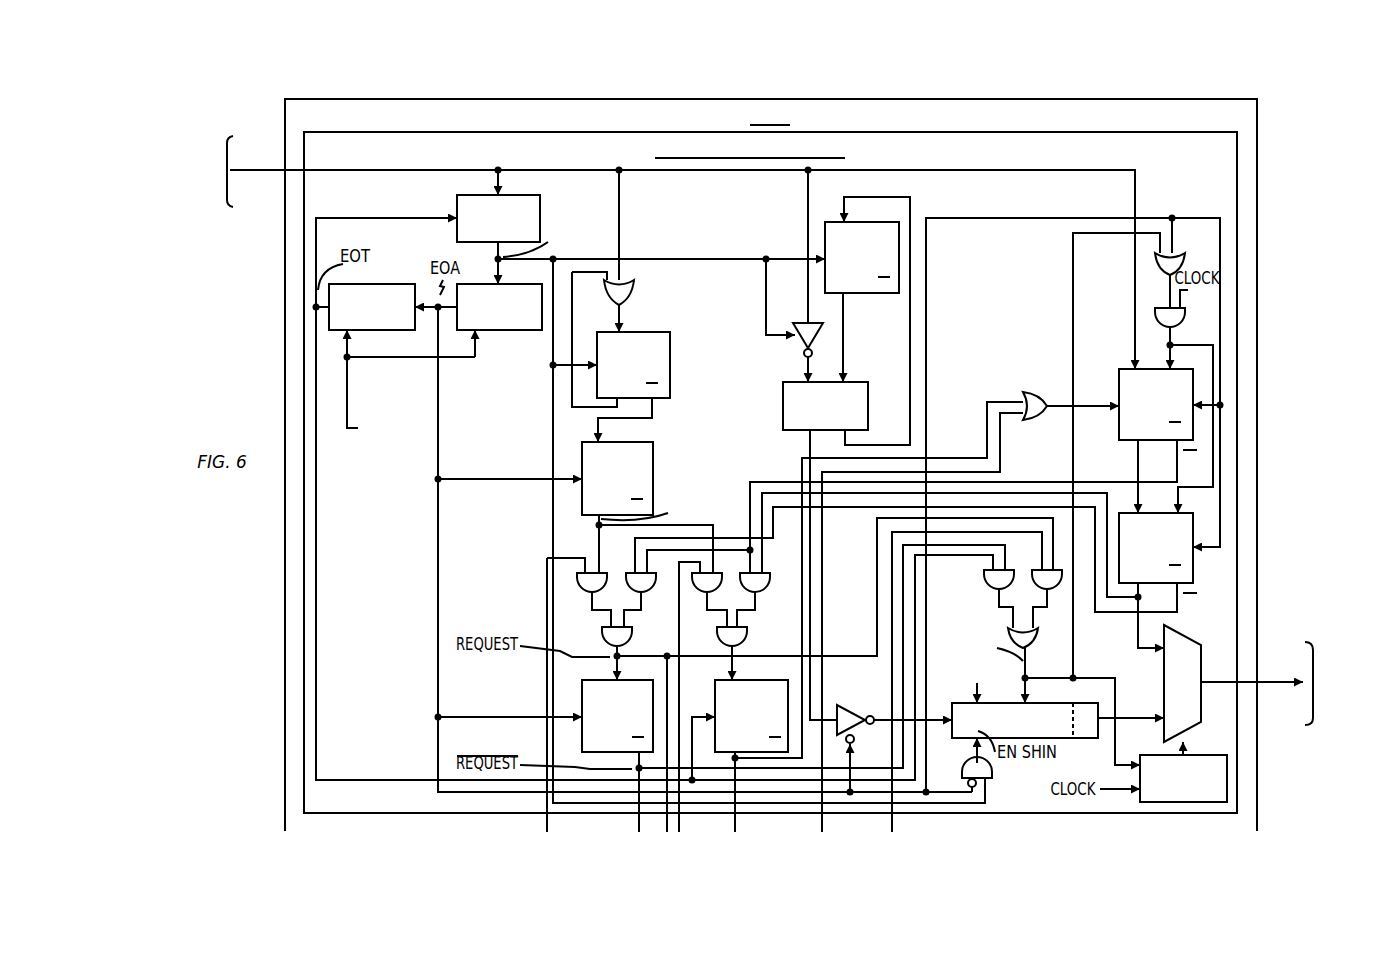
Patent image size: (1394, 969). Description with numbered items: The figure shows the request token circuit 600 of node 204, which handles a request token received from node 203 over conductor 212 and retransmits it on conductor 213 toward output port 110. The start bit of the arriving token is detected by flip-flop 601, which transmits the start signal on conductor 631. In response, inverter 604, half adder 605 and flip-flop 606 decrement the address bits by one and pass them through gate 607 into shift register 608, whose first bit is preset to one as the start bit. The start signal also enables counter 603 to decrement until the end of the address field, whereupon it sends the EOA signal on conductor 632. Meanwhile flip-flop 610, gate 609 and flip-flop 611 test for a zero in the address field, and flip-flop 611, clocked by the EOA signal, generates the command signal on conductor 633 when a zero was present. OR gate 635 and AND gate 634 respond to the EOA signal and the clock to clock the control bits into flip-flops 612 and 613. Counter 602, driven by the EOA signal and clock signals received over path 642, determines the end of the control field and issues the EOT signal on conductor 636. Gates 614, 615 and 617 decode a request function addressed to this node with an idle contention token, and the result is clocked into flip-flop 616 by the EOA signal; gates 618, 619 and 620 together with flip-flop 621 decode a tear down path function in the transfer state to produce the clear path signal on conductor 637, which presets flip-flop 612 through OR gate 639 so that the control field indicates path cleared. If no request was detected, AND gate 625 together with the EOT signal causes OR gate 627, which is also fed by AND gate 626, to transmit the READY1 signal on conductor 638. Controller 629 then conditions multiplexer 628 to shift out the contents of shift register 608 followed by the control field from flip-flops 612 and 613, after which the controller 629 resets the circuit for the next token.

The node 204 is at (818, 100).
The request token circuit 600 is at (1155, 132).
The node 203 is at (206, 171).
The conductor 212 is at (240, 170).
The conductor 213 is at (1275, 677).
The output port 110 is at (1340, 683).
The flip-flop 601 is at (513, 197).
The counter 602 is at (367, 284).
The counter 603 is at (487, 334).
The inverter 604 is at (800, 340).
The half adder 605 is at (783, 413).
The flip-flop 606 is at (880, 295).
The gate 607 is at (849, 705).
The shift register 608 is at (1049, 704).
The gate 609 is at (631, 302).
The flip-flop 610 is at (653, 333).
The flip-flop 611 is at (648, 442).
The flip-flop 612 is at (1122, 369).
The flip-flop 613 is at (1189, 520).
The gate 614 is at (605, 590).
The gate 615 is at (654, 590).
The flip-flop 616 is at (625, 680).
The gate 617 is at (630, 643).
The gate 618 is at (720, 590).
The gate 619 is at (768, 590).
The gate 620 is at (745, 643).
The flip-flop 621 is at (757, 680).
The AND gate 625 is at (1020, 594).
The AND gate 626 is at (1068, 594).
The OR gate 627 is at (1038, 639).
The multiplexer 628 is at (1200, 645).
The controller 629 is at (1192, 755).
The conductor 631 is at (665, 258).
The conductor 632 is at (438, 381).
The conductor 633 is at (597, 548).
The AND gate 634 is at (1182, 320).
The OR gate 635 is at (1184, 256).
The conductor 636 is at (318, 482).
The conductor 637 is at (990, 393).
The conductor 638 is at (1027, 668).
The OR gate 639 is at (1025, 391).
The path 642 is at (349, 406).